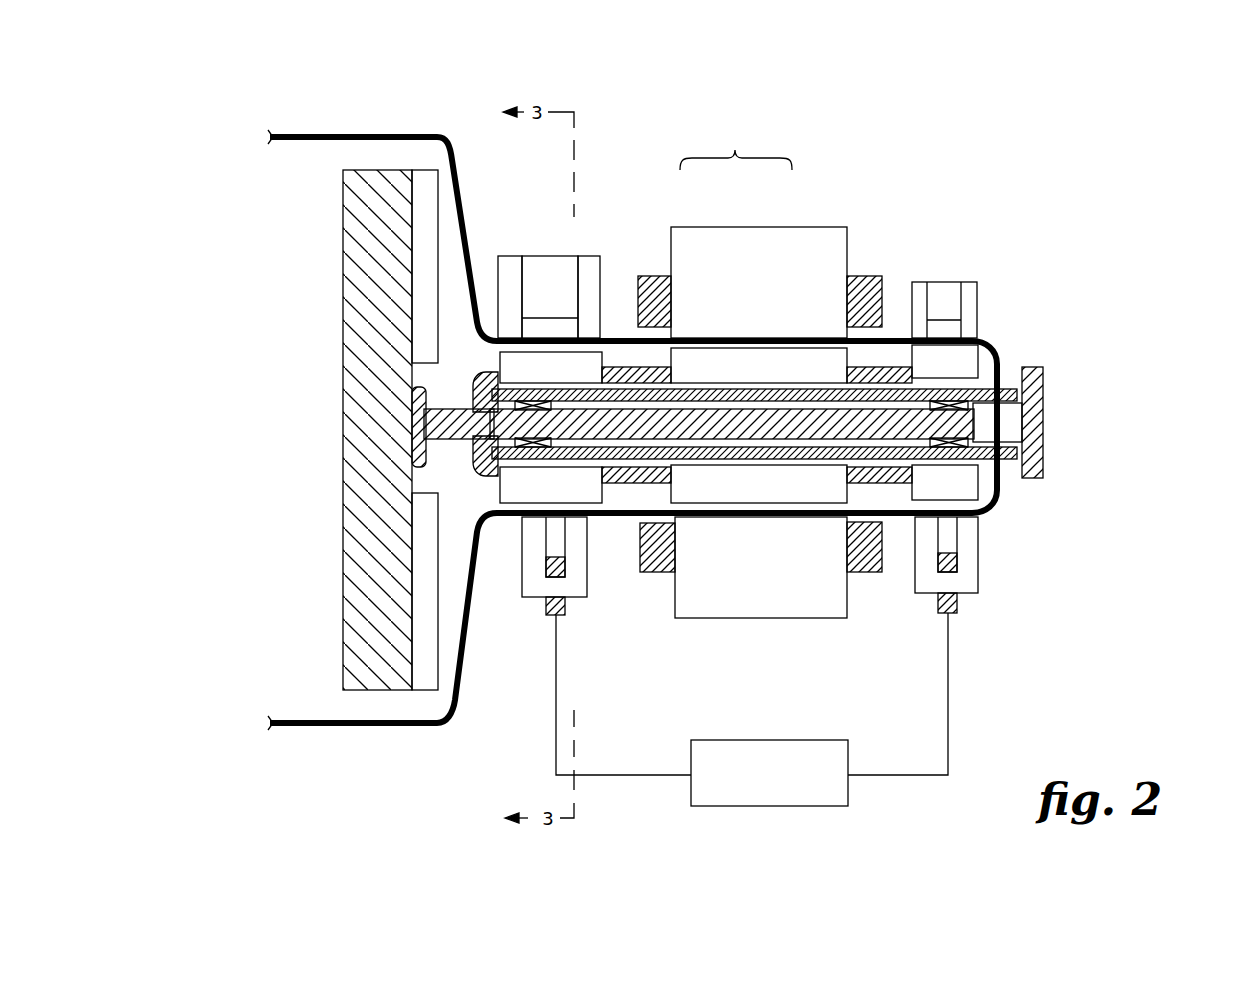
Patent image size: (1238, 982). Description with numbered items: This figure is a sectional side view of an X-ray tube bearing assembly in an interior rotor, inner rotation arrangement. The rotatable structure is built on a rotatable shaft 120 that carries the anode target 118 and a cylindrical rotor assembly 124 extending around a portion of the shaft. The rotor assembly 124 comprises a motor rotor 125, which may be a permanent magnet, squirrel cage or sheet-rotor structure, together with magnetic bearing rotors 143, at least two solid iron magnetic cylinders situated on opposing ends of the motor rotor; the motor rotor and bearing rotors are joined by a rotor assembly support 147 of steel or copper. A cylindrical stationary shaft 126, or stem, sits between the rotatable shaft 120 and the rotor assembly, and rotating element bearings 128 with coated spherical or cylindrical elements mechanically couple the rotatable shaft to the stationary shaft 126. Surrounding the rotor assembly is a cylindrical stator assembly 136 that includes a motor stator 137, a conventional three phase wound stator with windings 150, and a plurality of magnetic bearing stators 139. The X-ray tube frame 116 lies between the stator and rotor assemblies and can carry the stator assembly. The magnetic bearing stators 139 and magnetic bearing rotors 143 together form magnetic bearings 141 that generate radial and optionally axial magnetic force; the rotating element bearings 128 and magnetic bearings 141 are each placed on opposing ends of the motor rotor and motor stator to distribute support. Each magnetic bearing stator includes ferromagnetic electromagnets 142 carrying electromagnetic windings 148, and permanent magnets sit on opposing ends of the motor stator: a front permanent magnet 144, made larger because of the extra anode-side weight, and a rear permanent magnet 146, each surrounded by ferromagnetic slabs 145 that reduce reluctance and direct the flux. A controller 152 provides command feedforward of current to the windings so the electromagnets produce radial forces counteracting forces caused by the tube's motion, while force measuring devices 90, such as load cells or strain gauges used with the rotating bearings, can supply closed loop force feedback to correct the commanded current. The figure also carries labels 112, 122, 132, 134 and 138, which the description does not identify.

The feedback force measuring device 90 is at (553, 412).
The motor assembly 112 is at (495, 740).
The X-ray tube frame 116 is at (370, 134).
The anode target 118 is at (343, 588).
The rotatable shaft 120 is at (623, 430).
The hub 122 is at (442, 388).
The cylindrical rotor assembly 124 is at (465, 358).
The motor rotor 125 is at (772, 357).
The cylindrical stationary shaft 126 is at (774, 455).
The rotating element bearings 128 is at (490, 466).
The mounting plate 132 is at (391, 478).
The end flange 134 is at (1043, 472).
The cylindrical stator assembly 136 is at (485, 270).
The motor stator 137 is at (728, 240).
The motor section 138 is at (736, 145).
The magnetic bearing stators 139 is at (1003, 290).
The magnetic bearings 141 is at (1021, 516).
The electromagnets 142 is at (522, 583).
The magnetic bearing rotors 143 is at (935, 358).
The front permanent magnet 144 is at (548, 265).
The ferromagnetic slabs 145 is at (511, 280).
The rear permanent magnet 146 is at (943, 282).
The rotor assembly support 147 is at (625, 370).
The electromagnetic windings 148 is at (546, 600).
The windings 150 is at (858, 270).
The controller 152 is at (752, 709).